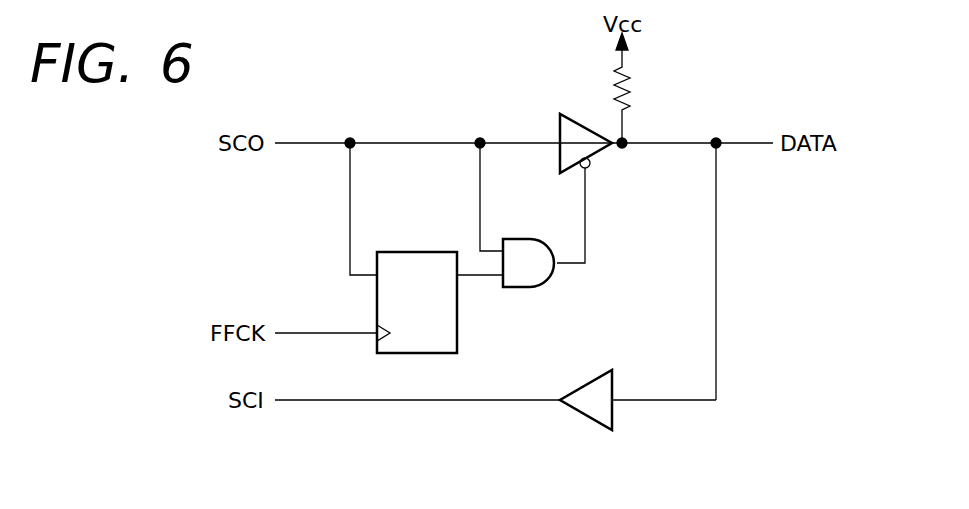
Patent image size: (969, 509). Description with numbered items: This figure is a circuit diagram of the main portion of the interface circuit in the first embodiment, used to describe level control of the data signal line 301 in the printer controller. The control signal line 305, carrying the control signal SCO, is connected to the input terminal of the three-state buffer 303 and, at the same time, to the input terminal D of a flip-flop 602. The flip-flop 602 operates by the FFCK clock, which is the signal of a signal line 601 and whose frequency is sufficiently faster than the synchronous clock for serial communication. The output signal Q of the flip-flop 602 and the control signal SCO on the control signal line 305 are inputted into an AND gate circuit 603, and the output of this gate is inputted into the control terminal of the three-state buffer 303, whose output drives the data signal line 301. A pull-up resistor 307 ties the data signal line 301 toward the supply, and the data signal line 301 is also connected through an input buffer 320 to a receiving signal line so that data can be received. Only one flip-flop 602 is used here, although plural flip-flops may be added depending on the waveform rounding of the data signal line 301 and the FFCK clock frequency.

The control signal line 305 is at (316, 142).
The three-state buffer 303 is at (558, 127).
The pull-up resistor 307 is at (612, 80).
The data signal line 301 is at (676, 141).
The flip-flop 602 is at (422, 250).
The AND gate circuit 603 is at (533, 237).
The signal line 601 is at (316, 331).
The input buffer 320 is at (580, 386).